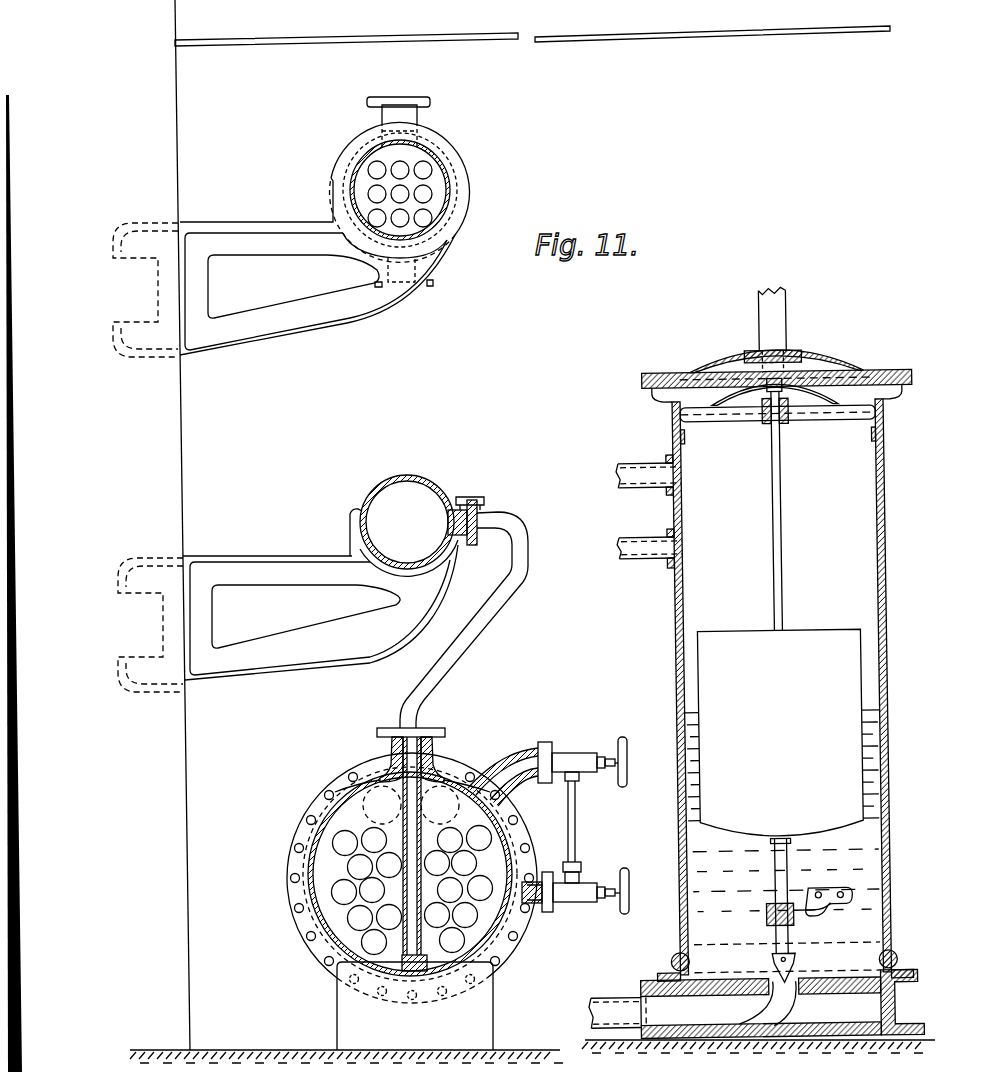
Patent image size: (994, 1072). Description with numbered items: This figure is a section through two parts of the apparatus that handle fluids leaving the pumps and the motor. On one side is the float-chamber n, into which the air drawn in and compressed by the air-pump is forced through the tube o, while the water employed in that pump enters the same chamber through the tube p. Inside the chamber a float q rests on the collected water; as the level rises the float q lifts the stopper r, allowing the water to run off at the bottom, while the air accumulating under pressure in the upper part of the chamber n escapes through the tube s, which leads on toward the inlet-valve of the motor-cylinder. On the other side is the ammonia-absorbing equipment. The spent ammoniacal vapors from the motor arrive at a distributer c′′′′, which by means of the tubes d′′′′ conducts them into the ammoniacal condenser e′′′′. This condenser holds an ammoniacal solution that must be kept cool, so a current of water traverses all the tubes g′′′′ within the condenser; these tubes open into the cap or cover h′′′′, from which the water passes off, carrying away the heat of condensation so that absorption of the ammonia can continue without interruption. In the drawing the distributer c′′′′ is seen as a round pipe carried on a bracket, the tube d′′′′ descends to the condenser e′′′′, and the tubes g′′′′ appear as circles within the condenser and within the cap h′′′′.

The cap or cover h′′′′ is at (352, 160).
The tubes g′′′′ is at (452, 172).
The distributer c′′′′ is at (428, 496).
The tubes d′′′′ is at (453, 657).
The ammoniacal condenser e′′′′ is at (300, 836).
The float-chamber n is at (751, 693).
The tube s is at (784, 334).
The tube o is at (649, 475).
The tube p is at (650, 549).
The float q is at (780, 733).
The stopper r is at (810, 909).